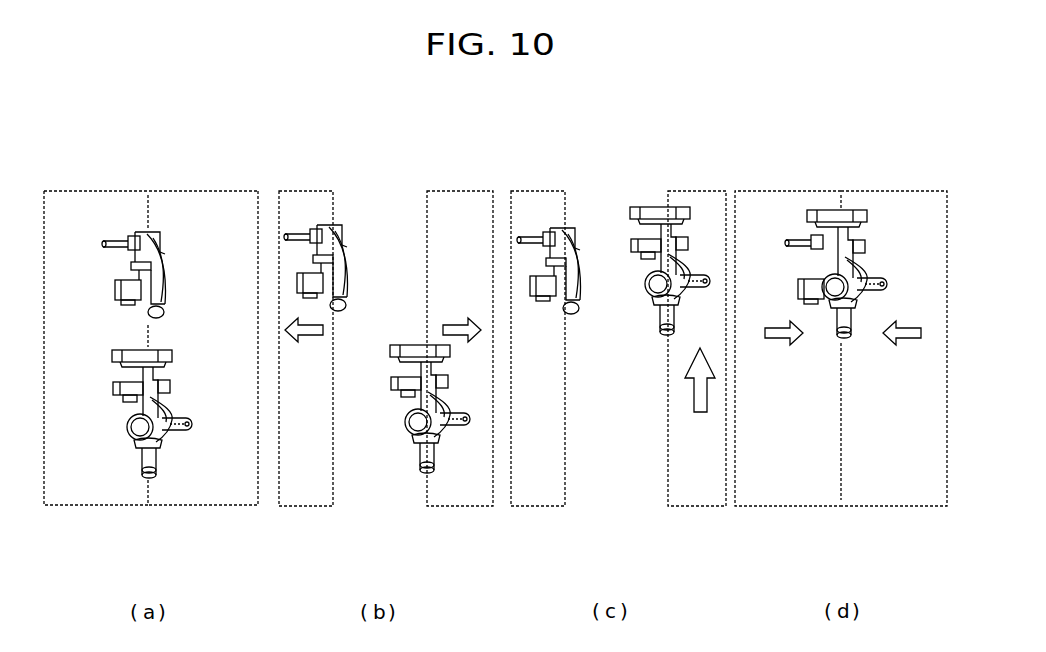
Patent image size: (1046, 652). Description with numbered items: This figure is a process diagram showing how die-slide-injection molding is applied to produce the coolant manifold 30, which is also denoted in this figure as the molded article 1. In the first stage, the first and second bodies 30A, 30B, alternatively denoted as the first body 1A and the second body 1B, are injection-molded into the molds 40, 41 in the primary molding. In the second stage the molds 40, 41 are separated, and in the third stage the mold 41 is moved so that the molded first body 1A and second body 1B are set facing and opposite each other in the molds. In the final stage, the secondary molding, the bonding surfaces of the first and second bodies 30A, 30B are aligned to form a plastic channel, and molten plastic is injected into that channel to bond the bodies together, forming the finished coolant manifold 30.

The coolant manifold 30 is at (858, 210).
The first body 30A is at (127, 428).
The second body 30B is at (580, 258).
The mold 40 is at (72, 203).
The mold 41 is at (212, 203).
The coolant manifold 1 is at (836, 200).
The first body 1A is at (376, 342).
The second body 1B is at (354, 195).